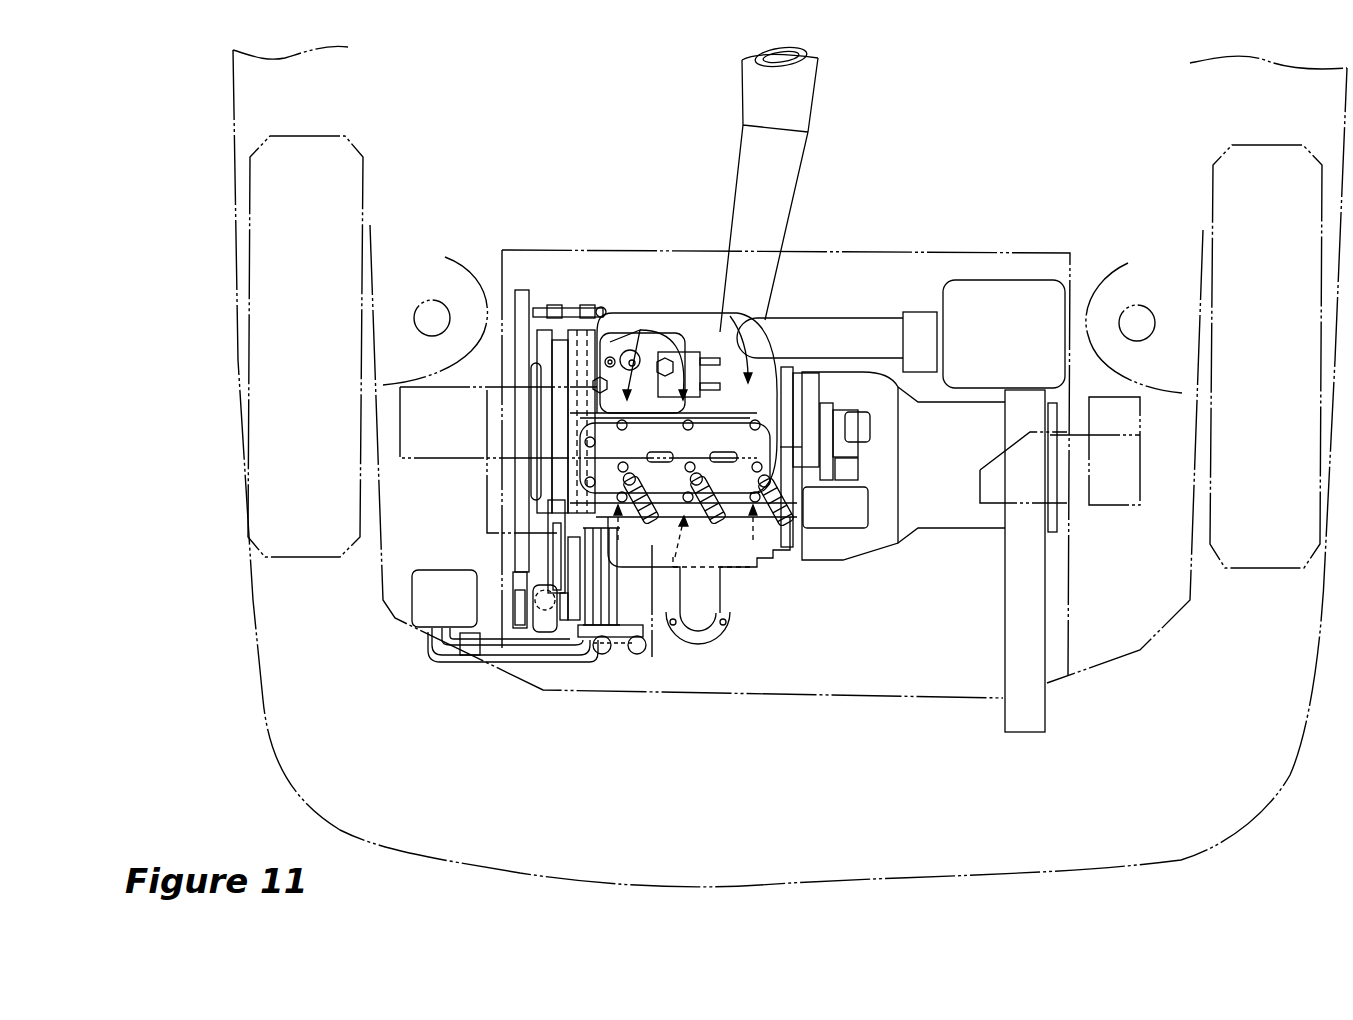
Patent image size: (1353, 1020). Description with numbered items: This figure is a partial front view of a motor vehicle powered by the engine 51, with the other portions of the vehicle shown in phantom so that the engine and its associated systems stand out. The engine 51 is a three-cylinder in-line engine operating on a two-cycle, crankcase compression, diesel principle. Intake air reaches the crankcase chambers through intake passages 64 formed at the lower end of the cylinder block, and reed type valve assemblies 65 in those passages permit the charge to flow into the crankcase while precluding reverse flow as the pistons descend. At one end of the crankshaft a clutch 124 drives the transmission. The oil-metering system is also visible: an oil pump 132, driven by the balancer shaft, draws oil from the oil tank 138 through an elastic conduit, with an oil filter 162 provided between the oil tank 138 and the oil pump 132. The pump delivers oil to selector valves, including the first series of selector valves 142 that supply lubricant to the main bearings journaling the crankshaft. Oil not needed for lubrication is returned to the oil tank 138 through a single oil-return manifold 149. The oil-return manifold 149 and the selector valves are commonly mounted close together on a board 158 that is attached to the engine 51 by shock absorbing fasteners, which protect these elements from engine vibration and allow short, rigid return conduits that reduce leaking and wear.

The engine 51 is at (632, 268).
The clutch 124 is at (795, 190).
The reed type valve assembly 65 is at (1027, 278).
The intake passage 64 is at (1045, 622).
The oil tank 138 is at (412, 588).
The oil filter 162 is at (467, 656).
The oil pump 132 is at (547, 617).
The oil-return manifold 149 is at (590, 657).
The first series of selector valves 142 is at (637, 657).
The board 158 is at (643, 637).